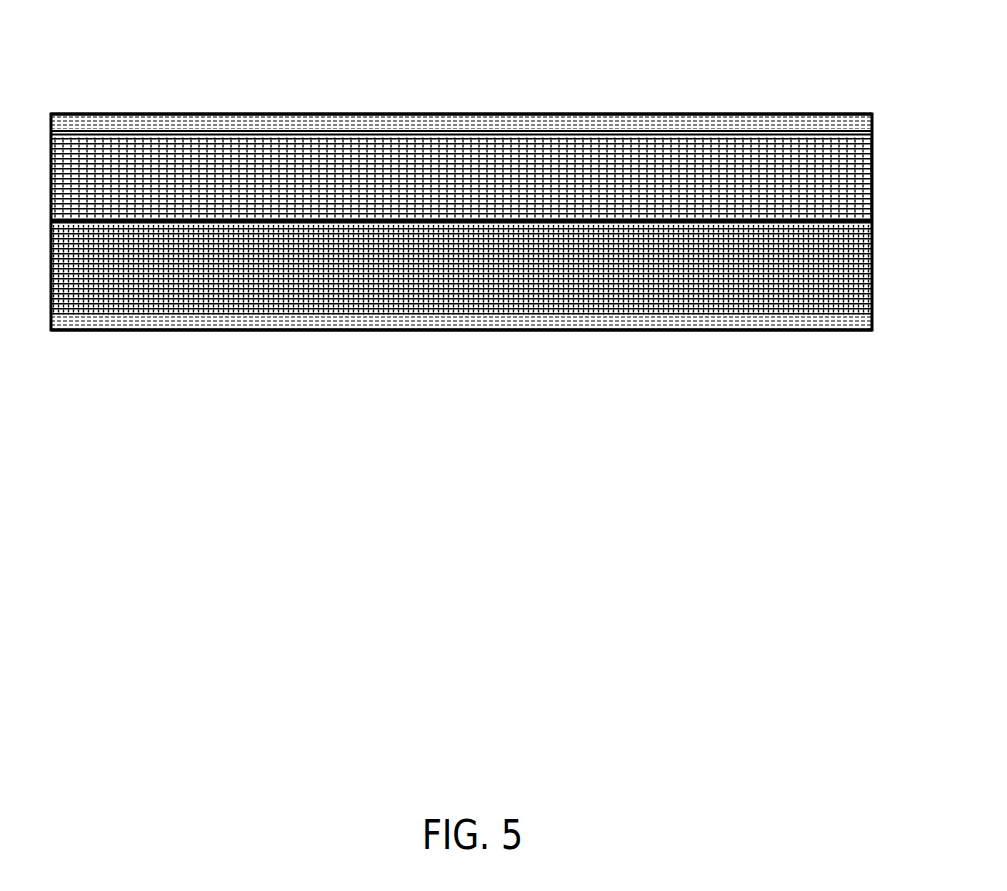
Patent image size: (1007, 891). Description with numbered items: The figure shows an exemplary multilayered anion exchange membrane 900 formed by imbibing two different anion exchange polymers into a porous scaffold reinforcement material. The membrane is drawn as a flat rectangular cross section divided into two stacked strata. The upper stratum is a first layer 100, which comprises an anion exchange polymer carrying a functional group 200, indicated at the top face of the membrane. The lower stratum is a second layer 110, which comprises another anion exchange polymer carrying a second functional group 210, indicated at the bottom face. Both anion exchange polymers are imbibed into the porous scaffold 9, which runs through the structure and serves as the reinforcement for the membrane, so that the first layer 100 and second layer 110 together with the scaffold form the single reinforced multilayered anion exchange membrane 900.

The multilayered anion exchange membrane 900 is at (487, 213).
The porous scaffold 9 is at (193, 148).
The first layer 100 is at (491, 130).
The second layer 110 is at (891, 225).
The functional group 200 is at (610, 112).
The second functional group 210 is at (570, 333).